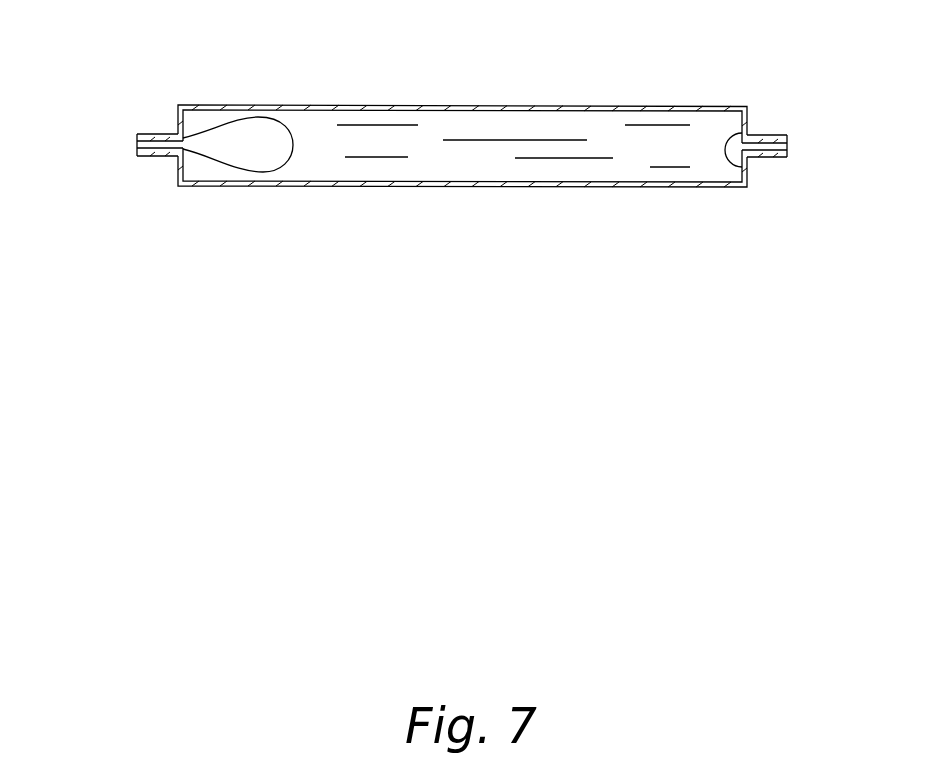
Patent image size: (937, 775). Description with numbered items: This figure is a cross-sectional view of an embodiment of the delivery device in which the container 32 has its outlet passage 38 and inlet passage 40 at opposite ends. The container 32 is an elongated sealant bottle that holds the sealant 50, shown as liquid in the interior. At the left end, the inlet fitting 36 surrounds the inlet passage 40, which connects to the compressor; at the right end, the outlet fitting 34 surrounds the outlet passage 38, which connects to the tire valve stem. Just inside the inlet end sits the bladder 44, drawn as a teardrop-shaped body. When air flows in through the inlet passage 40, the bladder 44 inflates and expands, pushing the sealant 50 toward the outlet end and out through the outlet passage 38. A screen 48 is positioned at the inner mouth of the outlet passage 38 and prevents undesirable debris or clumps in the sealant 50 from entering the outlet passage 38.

The container 32 is at (390, 110).
The outlet fitting 34 is at (772, 135).
The inlet fitting 36 is at (137, 135).
The outlet passage 38 is at (787, 153).
The inlet passage 40 is at (137, 153).
The bladder 44 is at (230, 120).
The screen 48 is at (732, 135).
The sealant 50 is at (518, 145).